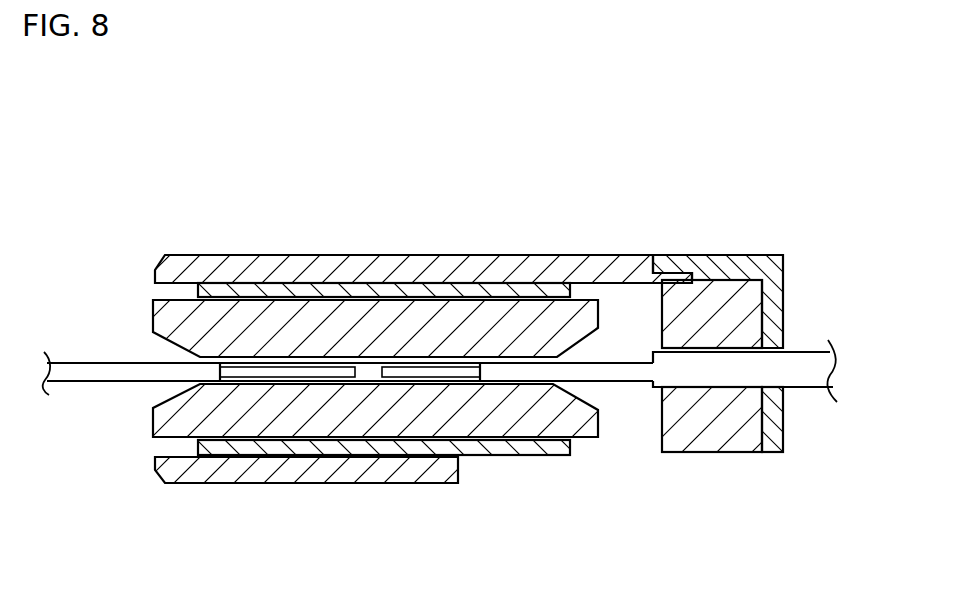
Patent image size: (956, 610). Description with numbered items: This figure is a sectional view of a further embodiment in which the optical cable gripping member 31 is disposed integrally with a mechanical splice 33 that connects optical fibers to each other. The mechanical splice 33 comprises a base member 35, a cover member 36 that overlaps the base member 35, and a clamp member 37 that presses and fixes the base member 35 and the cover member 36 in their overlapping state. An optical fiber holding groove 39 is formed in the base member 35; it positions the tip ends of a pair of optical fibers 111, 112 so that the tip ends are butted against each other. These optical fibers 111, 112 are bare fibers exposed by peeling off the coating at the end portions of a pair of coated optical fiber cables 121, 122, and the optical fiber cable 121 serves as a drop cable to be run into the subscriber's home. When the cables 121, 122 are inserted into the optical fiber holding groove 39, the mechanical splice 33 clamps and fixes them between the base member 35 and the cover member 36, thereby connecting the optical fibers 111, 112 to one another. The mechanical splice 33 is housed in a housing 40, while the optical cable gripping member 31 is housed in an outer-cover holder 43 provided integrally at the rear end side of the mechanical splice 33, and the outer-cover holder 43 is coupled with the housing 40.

The optical cable gripping member 31 is at (718, 313).
The mechanical splice 33 is at (273, 284).
The base member 35 is at (332, 415).
The cover member 36 is at (328, 317).
The clamp member 37 is at (372, 285).
The optical fiber holding groove 39 is at (368, 372).
The housing 40 is at (427, 256).
The outer-cover holder 43 is at (766, 255).
The optical fiber 111 is at (440, 367).
The optical fiber 112 is at (262, 368).
The optical fiber cable 121 is at (803, 368).
The optical fiber cable 122 is at (120, 363).